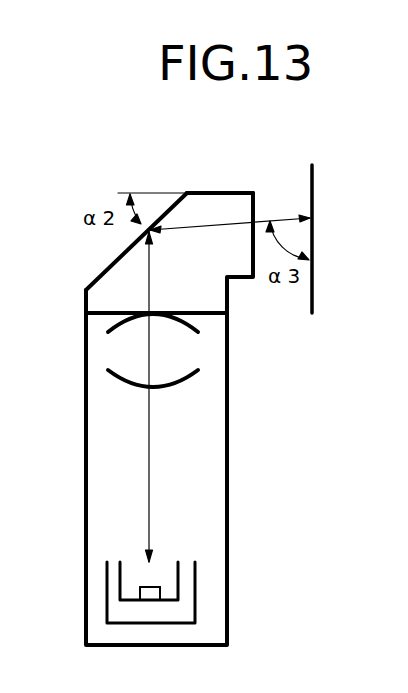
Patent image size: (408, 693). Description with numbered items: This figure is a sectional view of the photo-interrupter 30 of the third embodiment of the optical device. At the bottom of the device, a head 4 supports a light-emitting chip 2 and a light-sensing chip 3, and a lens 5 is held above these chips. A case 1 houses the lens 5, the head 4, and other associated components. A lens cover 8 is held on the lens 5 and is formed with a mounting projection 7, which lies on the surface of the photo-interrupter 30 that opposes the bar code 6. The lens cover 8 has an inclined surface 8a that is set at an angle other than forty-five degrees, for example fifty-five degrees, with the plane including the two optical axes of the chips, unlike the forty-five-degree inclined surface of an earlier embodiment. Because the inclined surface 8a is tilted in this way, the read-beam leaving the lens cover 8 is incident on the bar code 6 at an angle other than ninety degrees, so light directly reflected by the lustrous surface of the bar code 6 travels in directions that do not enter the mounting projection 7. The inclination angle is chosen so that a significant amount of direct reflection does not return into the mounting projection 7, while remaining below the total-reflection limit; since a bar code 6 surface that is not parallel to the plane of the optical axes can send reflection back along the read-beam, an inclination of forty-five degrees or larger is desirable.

The photo-interrupter 30 is at (128, 143).
The case 1 is at (85, 411).
The light-emitting chip 2 is at (158, 585).
The light-sensing chip 3 is at (150, 593).
The head 4 is at (107, 590).
The lens 5 is at (188, 353).
The bar code 6 is at (315, 188).
The mounting projection 7 is at (232, 192).
The lens cover 8 is at (96, 302).
The inclined surface 8a is at (97, 272).